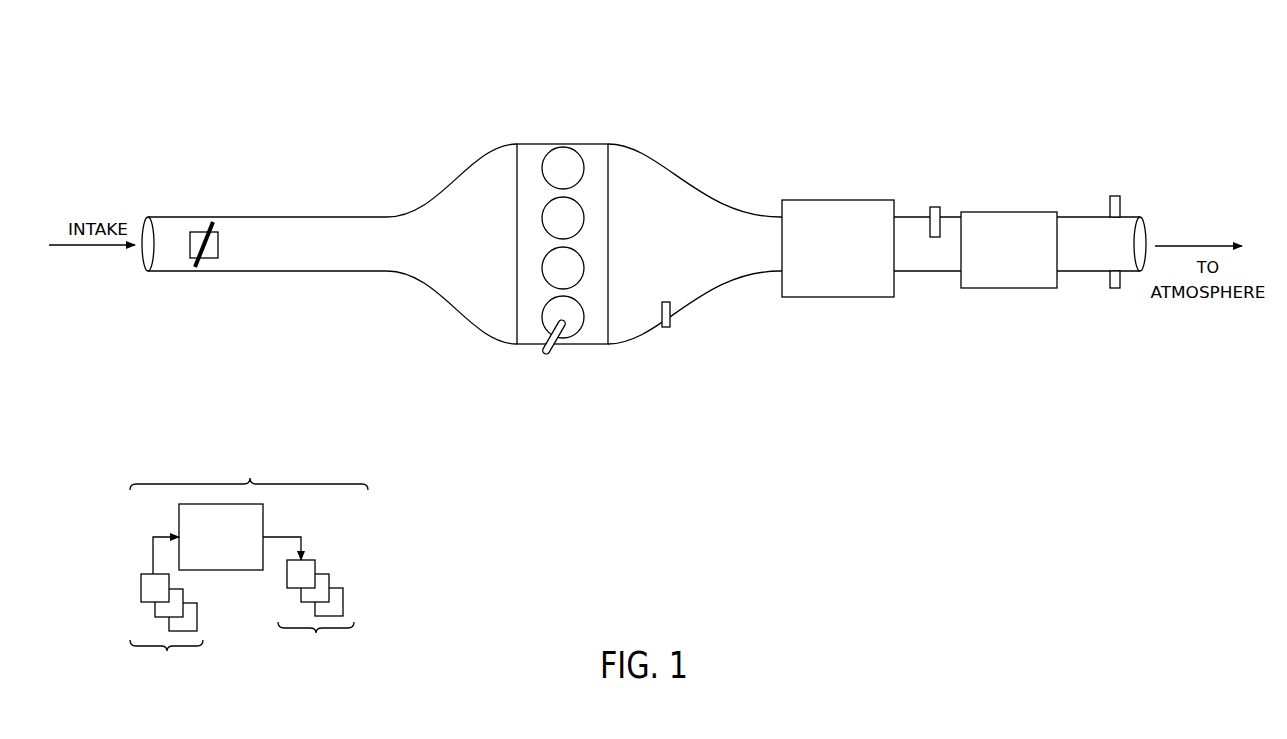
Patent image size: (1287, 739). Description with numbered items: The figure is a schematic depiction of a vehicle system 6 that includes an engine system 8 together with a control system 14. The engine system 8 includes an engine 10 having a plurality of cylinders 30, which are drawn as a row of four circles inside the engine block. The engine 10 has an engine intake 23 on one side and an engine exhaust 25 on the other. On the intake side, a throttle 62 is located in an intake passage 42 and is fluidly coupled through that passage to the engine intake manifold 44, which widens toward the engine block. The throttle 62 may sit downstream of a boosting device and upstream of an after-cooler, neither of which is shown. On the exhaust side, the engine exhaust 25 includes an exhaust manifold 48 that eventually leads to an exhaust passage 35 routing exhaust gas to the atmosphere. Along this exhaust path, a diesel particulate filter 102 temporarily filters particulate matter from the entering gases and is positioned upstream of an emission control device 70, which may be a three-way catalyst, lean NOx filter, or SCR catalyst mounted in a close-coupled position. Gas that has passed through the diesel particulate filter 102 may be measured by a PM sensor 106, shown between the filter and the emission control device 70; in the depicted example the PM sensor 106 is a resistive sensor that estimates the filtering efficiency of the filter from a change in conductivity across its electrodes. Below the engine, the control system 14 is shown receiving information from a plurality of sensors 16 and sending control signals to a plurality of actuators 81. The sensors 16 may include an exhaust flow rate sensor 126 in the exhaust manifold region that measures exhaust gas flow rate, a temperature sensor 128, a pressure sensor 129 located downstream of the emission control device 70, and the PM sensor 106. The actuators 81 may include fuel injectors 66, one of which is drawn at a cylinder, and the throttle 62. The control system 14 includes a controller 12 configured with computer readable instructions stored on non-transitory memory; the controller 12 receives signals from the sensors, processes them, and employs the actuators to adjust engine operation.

The vehicle system 6 is at (105, 88).
The engine system 8 is at (580, 229).
The engine 10 is at (608, 226).
The controller 12 is at (221, 537).
The control system 14 is at (249, 563).
The sensors 16 is at (166, 613).
The engine intake 23 is at (329, 209).
The engine exhaust 25 is at (706, 192).
The cylinders 30 is at (583, 163).
The exhaust passage 35 is at (1078, 215).
The intake passage 42 is at (252, 272).
The engine intake manifold 44 is at (452, 244).
The exhaust manifold 48 is at (695, 244).
The throttle 62 is at (218, 256).
The fuel injectors 66 is at (556, 349).
The emission control device 70 is at (1009, 250).
The actuators 81 is at (308, 605).
The diesel particulate filter 102 is at (838, 248).
The PM sensor 106 is at (932, 207).
The exhaust flow rate sensor 126 is at (670, 307).
The temperature sensor 128 is at (1111, 278).
The pressure sensor 129 is at (1110, 205).